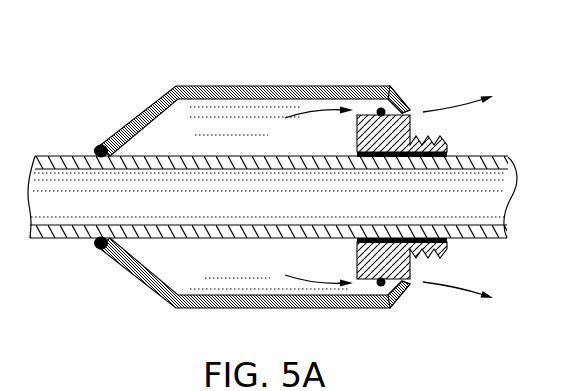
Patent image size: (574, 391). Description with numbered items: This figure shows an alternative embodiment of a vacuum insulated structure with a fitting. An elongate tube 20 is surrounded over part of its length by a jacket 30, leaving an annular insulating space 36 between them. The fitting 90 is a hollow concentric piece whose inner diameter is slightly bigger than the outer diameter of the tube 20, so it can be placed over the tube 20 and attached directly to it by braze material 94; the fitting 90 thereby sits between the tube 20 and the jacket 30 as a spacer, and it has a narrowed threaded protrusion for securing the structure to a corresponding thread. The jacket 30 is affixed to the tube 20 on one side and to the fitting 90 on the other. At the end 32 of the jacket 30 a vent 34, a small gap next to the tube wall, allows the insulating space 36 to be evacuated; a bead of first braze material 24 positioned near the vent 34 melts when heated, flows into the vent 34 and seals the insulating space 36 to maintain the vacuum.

The tube 20 is at (52, 157).
The jacket 30 is at (174, 86).
The annular insulating space 36 is at (243, 135).
The first braze material 24 is at (380, 109).
The end of the jacket 32 is at (400, 87).
The vent 34 is at (413, 110).
The fitting 90 is at (388, 127).
The braze material 94 is at (447, 156).